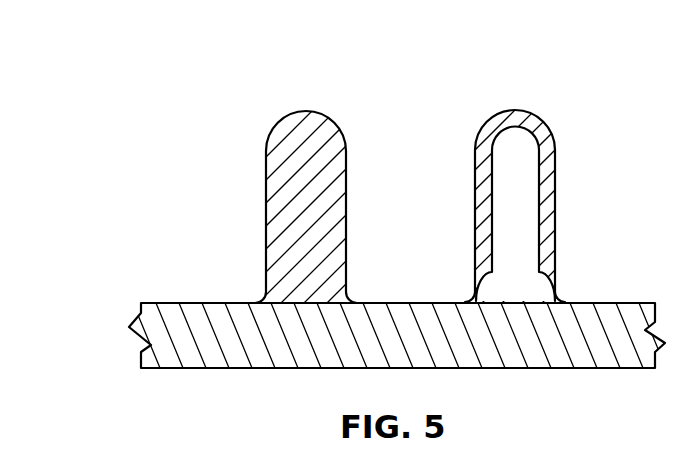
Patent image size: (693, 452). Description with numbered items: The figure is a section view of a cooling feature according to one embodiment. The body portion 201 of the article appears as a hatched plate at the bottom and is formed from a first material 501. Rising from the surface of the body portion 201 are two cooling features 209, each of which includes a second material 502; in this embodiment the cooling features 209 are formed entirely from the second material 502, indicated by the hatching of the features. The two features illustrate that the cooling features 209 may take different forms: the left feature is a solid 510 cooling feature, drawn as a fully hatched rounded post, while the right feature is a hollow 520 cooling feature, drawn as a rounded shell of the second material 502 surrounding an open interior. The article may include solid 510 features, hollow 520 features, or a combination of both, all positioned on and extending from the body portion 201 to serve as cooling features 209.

The body portion 201 is at (175, 333).
The first material 501 is at (552, 338).
The cooling features 209 is at (383, 162).
The solid cooling feature 510 is at (290, 112).
The hollow cooling feature 520 is at (555, 185).
The second material 502 is at (297, 205).